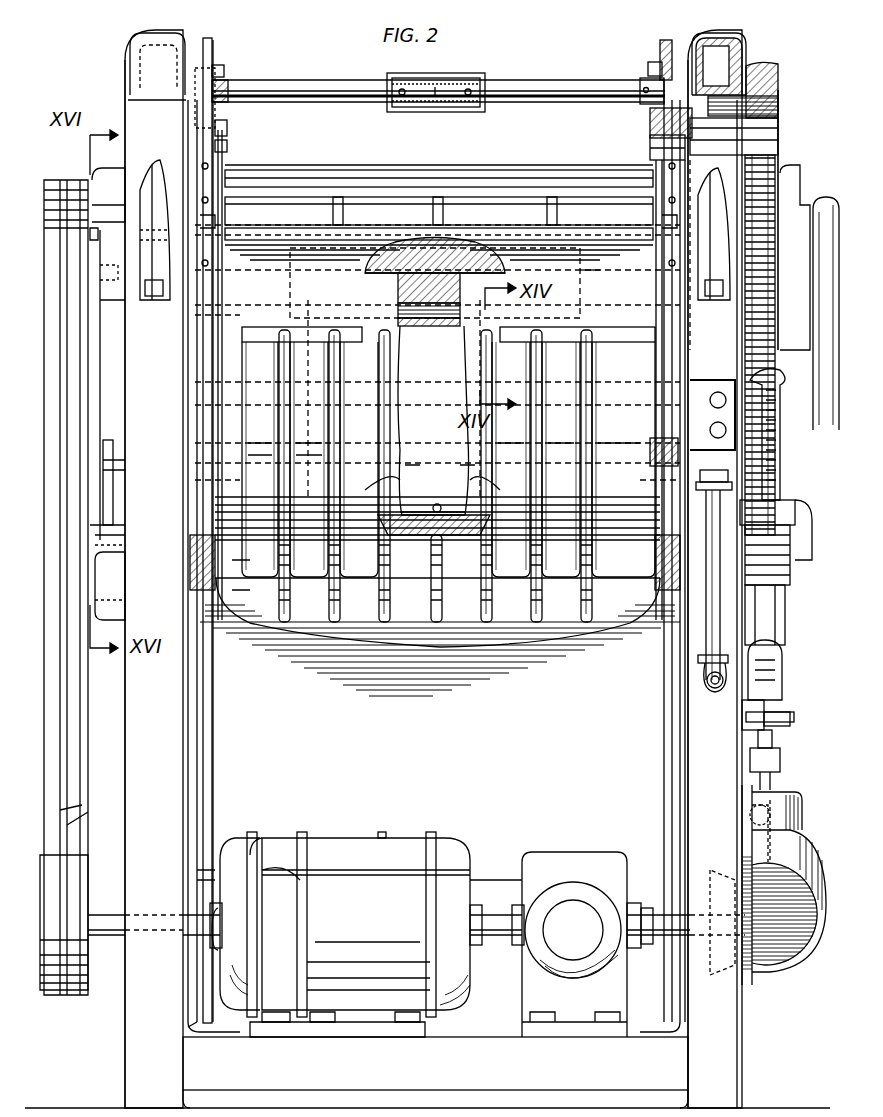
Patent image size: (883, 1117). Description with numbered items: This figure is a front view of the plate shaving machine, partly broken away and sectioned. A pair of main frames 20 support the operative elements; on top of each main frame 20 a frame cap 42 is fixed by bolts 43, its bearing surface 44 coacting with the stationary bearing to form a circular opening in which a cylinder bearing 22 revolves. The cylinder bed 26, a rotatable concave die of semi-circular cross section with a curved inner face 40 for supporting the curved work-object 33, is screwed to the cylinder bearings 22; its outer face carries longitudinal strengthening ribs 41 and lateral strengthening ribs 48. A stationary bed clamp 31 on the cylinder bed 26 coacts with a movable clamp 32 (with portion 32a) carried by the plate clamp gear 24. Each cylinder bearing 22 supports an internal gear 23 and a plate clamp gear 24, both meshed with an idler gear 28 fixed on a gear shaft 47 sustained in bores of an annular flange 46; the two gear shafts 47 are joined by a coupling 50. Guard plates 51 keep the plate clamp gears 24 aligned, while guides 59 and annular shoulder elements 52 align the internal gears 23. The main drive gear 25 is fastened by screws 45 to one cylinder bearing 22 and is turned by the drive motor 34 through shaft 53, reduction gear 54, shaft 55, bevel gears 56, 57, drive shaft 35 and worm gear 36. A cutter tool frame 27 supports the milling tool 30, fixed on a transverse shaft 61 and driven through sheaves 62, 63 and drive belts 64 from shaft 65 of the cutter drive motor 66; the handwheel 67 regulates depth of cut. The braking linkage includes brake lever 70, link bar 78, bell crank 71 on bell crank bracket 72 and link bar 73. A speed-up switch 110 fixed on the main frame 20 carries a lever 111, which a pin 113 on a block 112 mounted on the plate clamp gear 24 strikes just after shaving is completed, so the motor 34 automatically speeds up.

The main frame 20 is at (145, 740).
The cylinder bearing 22 is at (200, 92).
The internal gear 23 is at (212, 48).
The plate clamp gear 24 is at (225, 128).
The main drive gear 25 is at (778, 80).
The cylinder bed 26 is at (458, 535).
The cutter tool frame 27 is at (440, 165).
The idler gear 28 is at (230, 72).
The milling tool 30 is at (368, 270).
The bed clamp 31 is at (428, 326).
The movable clamp 32 is at (468, 372).
The column portion 32a is at (590, 268).
The work-object 33 is at (428, 512).
The drive motor 34 is at (450, 850).
The drive shaft 35 is at (770, 676).
The worm gear 36 is at (800, 545).
The inner face 40 is at (418, 528).
The longitudinal strengthening ribs 41 is at (487, 622).
The frame cap 42 is at (140, 44).
The bolt 43 is at (152, 170).
The bearing surface 44 is at (431, 66).
The screw 45 is at (776, 104).
The annular flange 46 is at (160, 56).
The gear shaft 47 is at (318, 88).
The lateral strengthening ribs 48 is at (262, 540).
The coupling 50 is at (435, 80).
The guard plate 51 is at (225, 147).
The annular shoulder element 52 is at (222, 68).
The shaft 53 is at (492, 928).
The reduction gear 54 is at (570, 855).
The shaft 55 is at (652, 905).
The bevel gear 56 is at (710, 968).
The bevel gear 57 is at (735, 900).
The guide 59 is at (200, 185).
The transverse shaft 61 is at (260, 283).
The sheave 62 is at (62, 190).
The sheave 63 is at (63, 990).
The drive belt 64 is at (72, 815).
The shaft 65 is at (102, 915).
The cutter drive motor 66 is at (240, 850).
The handwheel 67 is at (828, 425).
The brake lever 70 is at (780, 478).
The bell crank 71 is at (770, 725).
The bell crank bracket 72 is at (748, 722).
The link bar 73 is at (780, 760).
The link bar 78 is at (780, 622).
The speed-up switch 110 is at (102, 588).
The lever 111 is at (103, 498).
The block 112 is at (200, 245).
The pin 113 is at (110, 290).